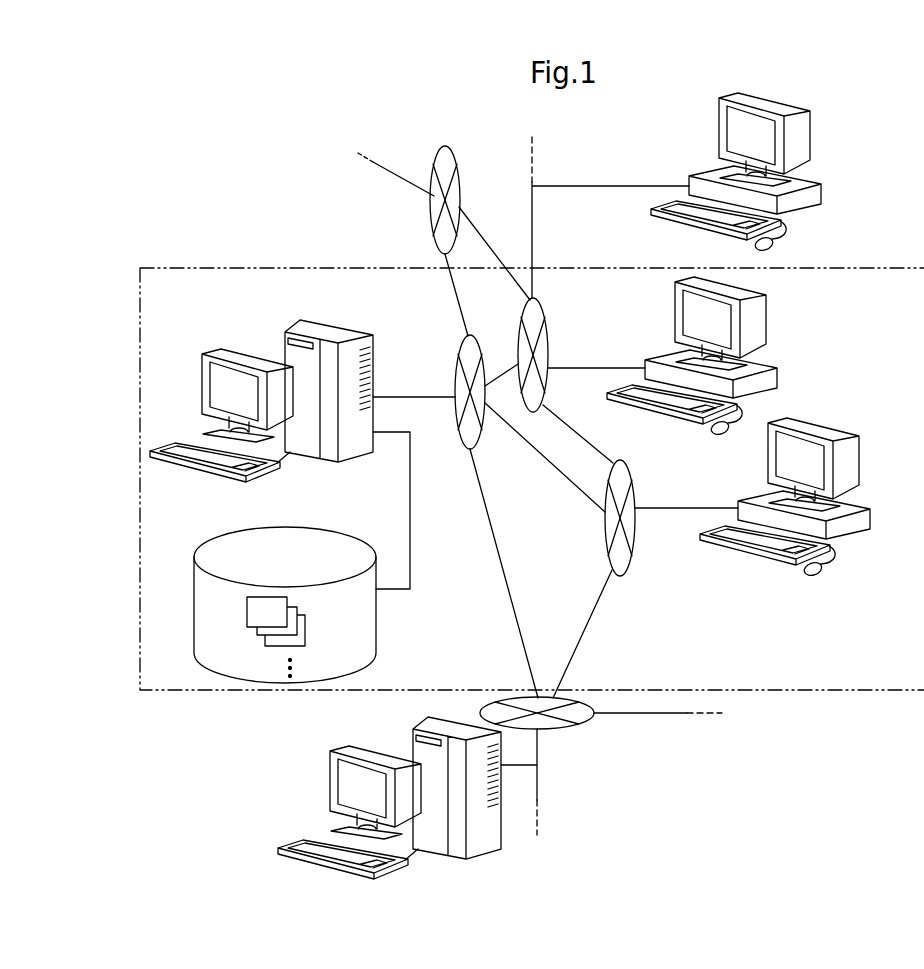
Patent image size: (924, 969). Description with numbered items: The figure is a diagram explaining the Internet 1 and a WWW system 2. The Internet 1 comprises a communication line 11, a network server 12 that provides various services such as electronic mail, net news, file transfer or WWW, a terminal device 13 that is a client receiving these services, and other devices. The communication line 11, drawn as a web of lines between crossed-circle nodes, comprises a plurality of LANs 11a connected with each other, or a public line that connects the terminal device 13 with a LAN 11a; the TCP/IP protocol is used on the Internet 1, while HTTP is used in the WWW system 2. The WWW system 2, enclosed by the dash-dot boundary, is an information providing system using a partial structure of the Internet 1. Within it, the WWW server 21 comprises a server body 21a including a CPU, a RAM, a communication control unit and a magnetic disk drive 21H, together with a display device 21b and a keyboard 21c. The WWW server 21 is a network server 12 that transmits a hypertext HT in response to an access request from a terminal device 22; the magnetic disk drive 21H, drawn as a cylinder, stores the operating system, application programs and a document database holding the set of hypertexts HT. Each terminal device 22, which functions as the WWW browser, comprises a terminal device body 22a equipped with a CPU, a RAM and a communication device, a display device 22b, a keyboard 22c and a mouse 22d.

The Internet 1 is at (313, 164).
The WWW system 2 is at (335, 270).
The communication line 11 is at (479, 503).
The LAN 11a is at (457, 166).
The network server 12 is at (408, 736).
The terminal device 13 is at (833, 195).
The WWW server 21 is at (290, 397).
The server body 21a is at (330, 452).
The display device 21b is at (233, 352).
The keyboard 21c is at (184, 466).
The magnetic disk drive 21H is at (376, 617).
The hypertext HT is at (247, 612).
The terminal device 22 is at (754, 456).
The terminal device body 22a is at (772, 383).
The display device 22b is at (674, 320).
The keyboard 22c is at (611, 399).
The mouse 22d is at (713, 430).